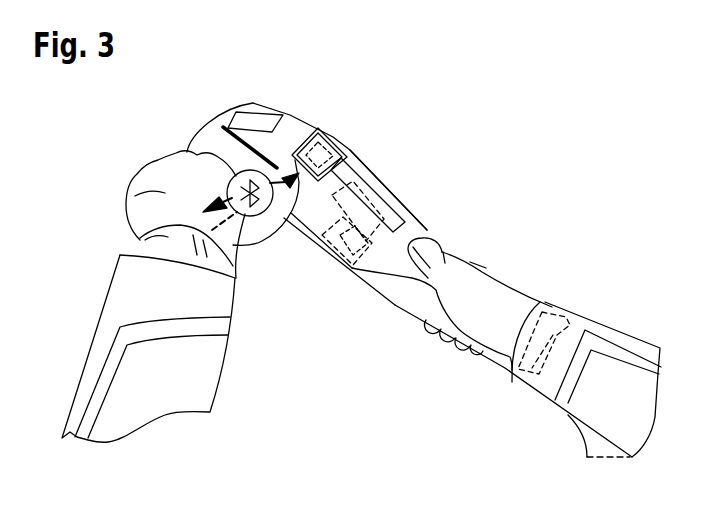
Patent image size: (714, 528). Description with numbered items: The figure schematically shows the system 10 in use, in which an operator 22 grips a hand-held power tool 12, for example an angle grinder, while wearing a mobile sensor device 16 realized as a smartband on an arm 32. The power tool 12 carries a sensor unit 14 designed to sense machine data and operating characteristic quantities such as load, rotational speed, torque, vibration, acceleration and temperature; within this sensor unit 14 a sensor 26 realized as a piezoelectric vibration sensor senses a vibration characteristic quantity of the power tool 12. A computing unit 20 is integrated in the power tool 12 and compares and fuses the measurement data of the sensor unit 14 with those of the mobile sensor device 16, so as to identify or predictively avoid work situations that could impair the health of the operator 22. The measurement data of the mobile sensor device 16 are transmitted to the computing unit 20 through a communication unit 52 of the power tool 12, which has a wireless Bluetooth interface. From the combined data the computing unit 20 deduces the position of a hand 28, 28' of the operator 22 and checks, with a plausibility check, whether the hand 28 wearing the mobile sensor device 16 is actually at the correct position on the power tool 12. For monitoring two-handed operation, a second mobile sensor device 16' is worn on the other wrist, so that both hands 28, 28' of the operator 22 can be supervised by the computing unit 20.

The system 10 is at (510, 172).
The power tool 12 is at (257, 114).
The sensor unit 14 is at (328, 252).
The mobile sensor device 16 is at (138, 251).
The second mobile sensor device 16' is at (586, 335).
The computing unit 20 is at (390, 196).
The operator 22 is at (566, 421).
The sensor 26 is at (337, 262).
The hand 28 is at (142, 214).
The hand 28' is at (492, 346).
The arm 32 is at (142, 373).
The communication unit 52 is at (335, 137).